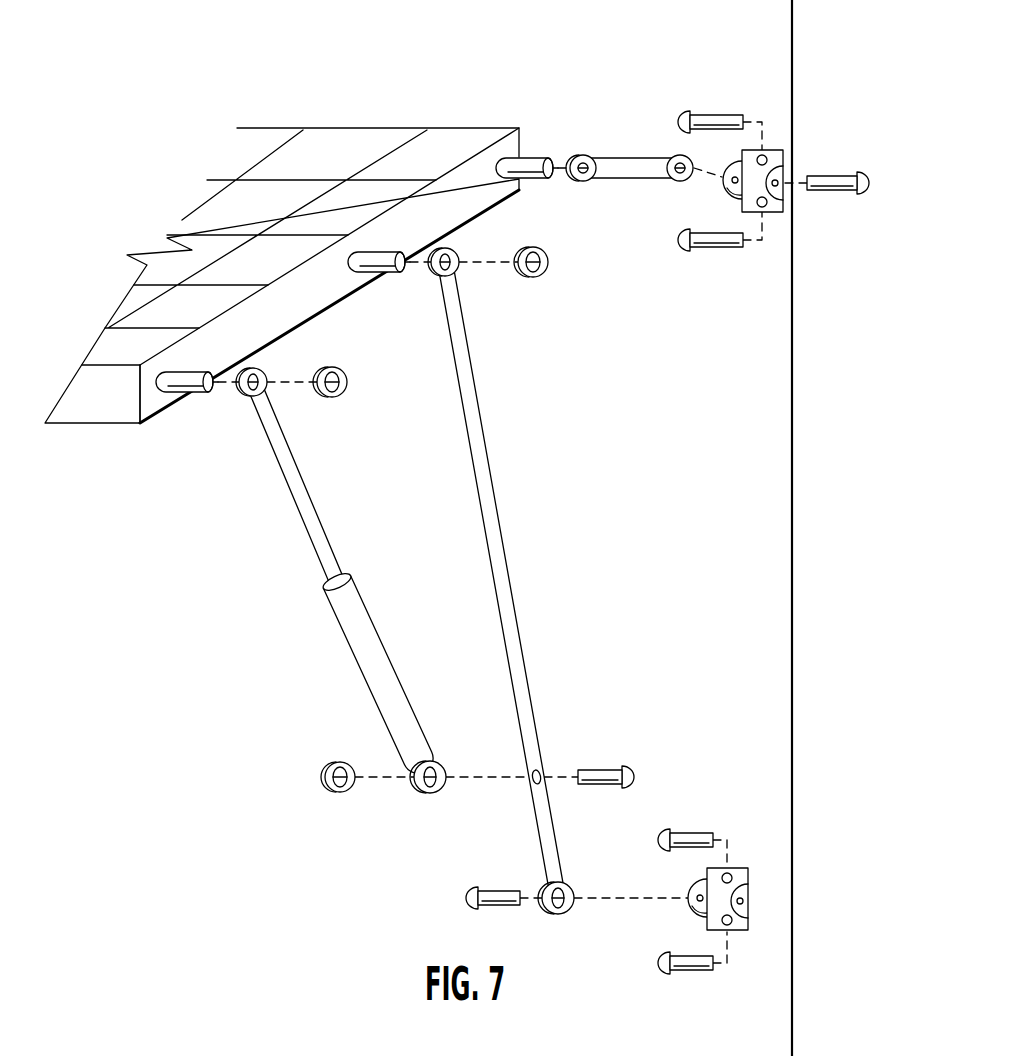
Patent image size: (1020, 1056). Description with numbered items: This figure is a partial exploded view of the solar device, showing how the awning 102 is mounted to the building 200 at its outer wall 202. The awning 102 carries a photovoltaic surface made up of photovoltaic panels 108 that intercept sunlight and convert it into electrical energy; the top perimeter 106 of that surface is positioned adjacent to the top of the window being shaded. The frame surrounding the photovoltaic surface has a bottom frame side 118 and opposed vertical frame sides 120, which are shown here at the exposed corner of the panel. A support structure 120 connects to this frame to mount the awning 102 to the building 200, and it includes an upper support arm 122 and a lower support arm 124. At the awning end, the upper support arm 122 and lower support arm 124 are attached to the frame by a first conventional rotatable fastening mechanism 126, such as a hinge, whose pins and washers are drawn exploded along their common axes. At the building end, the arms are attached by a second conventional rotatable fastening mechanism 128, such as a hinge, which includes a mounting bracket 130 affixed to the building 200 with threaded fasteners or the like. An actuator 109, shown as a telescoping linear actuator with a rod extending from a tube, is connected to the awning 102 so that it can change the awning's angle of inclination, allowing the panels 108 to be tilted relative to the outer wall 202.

The awning 102 is at (282, 245).
The top perimeter 106 is at (466, 128).
The photovoltaic panel 108 is at (412, 154).
The actuator 109 is at (320, 612).
The bottom frame side 118 is at (88, 407).
The vertical frame side 120 is at (152, 405).
The upper support arm 122 is at (617, 158).
The lower support arm 124 is at (478, 513).
The first rotatable fastening mechanism 126 is at (531, 182).
The second rotatable fastening mechanism 128 is at (767, 216).
The mounting bracket 130 is at (763, 152).
The building 200 is at (795, 462).
The outer wall 202 is at (700, 396).